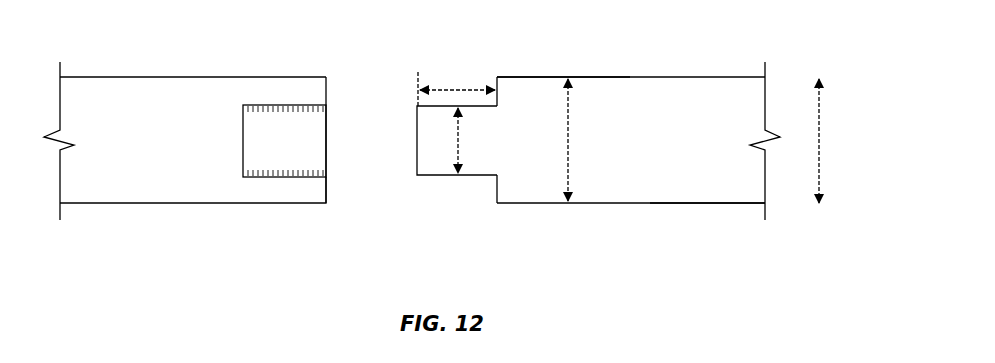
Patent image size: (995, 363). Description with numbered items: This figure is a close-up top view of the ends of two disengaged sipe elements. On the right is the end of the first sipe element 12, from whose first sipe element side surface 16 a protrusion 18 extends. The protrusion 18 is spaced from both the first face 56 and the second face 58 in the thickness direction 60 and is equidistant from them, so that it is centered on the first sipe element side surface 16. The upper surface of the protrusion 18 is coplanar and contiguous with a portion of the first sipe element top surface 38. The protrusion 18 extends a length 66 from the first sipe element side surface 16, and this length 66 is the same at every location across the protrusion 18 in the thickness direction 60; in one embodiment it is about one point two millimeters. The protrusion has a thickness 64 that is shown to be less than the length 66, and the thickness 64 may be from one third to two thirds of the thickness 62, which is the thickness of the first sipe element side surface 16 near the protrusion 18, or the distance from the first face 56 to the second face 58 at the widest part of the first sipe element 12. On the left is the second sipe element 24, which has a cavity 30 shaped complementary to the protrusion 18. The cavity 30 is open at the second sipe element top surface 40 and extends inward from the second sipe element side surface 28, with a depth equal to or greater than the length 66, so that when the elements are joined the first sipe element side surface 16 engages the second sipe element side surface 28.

The first sipe element 12 is at (683, 79).
The first sipe element side surface 16 is at (495, 190).
The protrusion 18 is at (445, 176).
The second sipe element 24 is at (130, 77).
The second sipe element side surface 28 is at (333, 193).
The cavity 30 is at (276, 107).
The first sipe element top surface 38 is at (669, 183).
The second sipe element top surface 40 is at (160, 186).
The first face 56 is at (597, 73).
The second face 58 is at (602, 207).
The thickness direction 60 is at (821, 140).
The thickness 62 is at (572, 140).
The thickness 64 is at (461, 140).
The length 66 is at (458, 88).